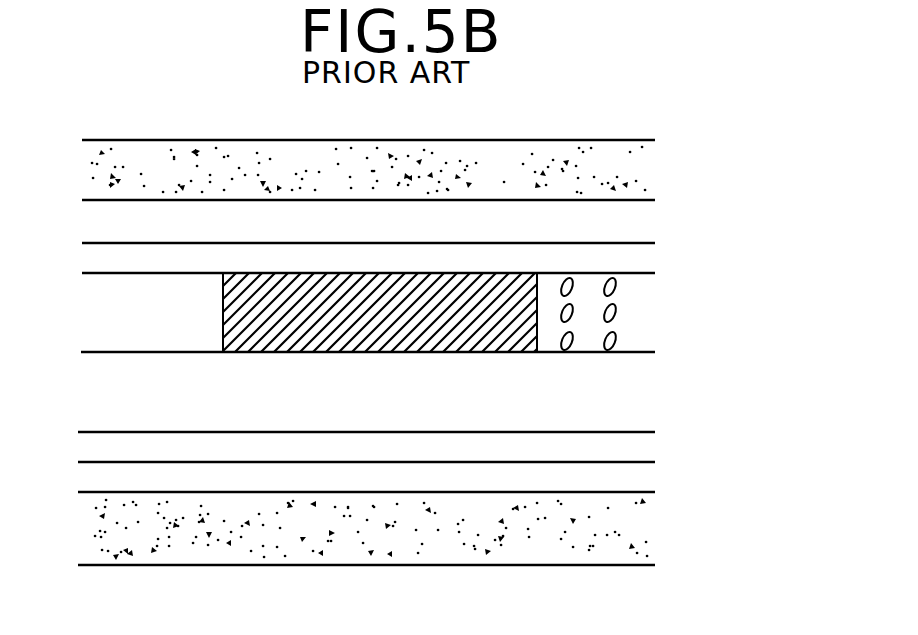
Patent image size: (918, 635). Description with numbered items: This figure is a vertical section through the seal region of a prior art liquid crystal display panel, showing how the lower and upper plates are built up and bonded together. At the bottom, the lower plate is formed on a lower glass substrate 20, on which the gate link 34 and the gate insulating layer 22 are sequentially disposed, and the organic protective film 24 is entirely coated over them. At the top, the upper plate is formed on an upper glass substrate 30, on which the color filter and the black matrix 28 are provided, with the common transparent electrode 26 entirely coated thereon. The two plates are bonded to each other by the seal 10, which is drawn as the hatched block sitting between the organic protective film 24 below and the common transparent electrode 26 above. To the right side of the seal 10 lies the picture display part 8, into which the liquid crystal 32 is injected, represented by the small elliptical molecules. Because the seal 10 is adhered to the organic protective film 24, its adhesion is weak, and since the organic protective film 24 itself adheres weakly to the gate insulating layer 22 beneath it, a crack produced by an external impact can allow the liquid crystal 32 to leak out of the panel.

The upper glass substrate 30 is at (645, 172).
The black matrix 28 is at (647, 226).
The common transparent electrode 26 is at (651, 265).
The picture display part 8 is at (649, 296).
The liquid crystal 32 is at (615, 313).
The seal 10 is at (223, 322).
The organic protective film 24 is at (651, 377).
The gate insulating layer 22 is at (645, 446).
The gate link 34 is at (645, 476).
The lower glass substrate 20 is at (648, 534).